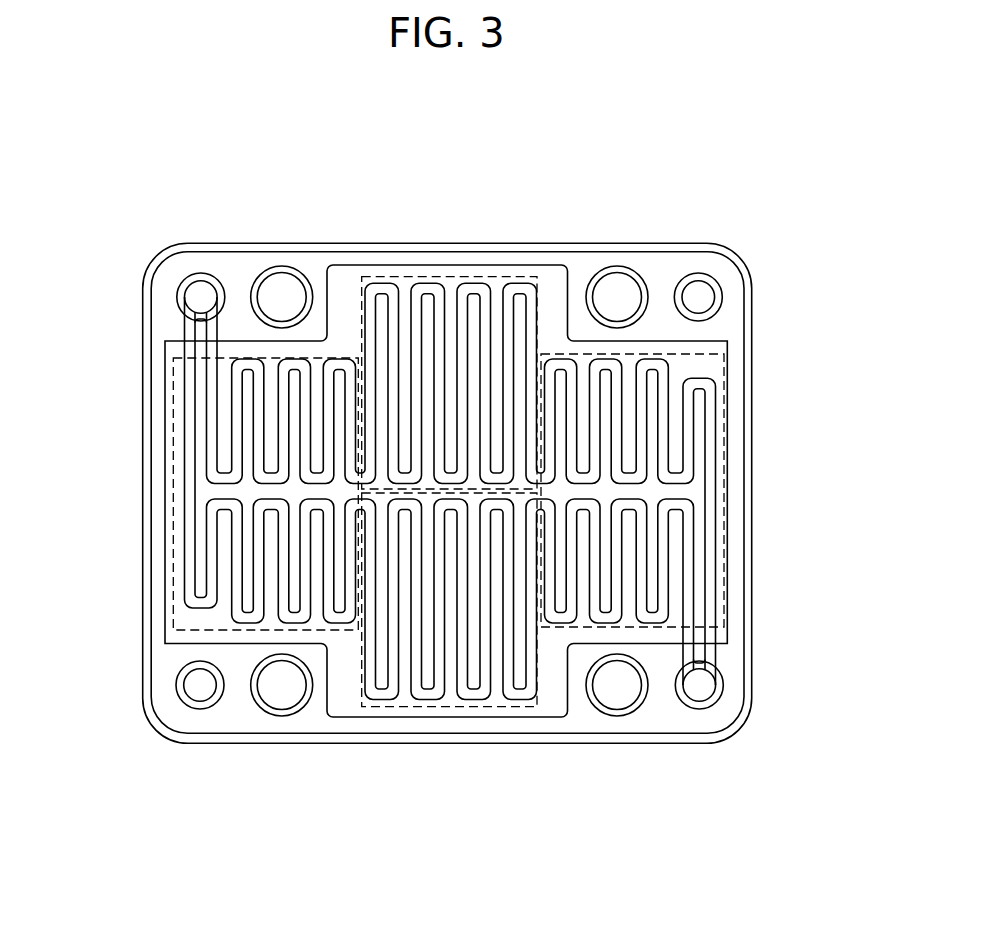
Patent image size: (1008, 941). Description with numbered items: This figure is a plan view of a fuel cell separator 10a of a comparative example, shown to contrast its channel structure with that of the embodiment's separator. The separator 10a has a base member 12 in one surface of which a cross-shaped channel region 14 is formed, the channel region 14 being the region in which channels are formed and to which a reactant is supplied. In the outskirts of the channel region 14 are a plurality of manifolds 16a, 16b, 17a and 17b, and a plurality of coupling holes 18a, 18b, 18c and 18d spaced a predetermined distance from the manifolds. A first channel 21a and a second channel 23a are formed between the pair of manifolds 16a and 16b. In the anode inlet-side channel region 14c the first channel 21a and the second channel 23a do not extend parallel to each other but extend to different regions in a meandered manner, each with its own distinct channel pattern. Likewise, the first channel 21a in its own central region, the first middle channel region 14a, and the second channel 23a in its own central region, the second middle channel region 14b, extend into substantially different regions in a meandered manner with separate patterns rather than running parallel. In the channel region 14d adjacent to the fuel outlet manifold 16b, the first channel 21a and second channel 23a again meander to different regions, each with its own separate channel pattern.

The separator 10a is at (714, 140).
The base member 12 is at (739, 372).
The channel region 14 is at (731, 410).
The first middle channel region 14a is at (449, 707).
The second middle channel region 14b is at (455, 278).
The anode inlet-side channel region 14c is at (172, 473).
The channel region adjacent to the fuel outlet manifold 14d is at (732, 470).
The manifold 16a is at (201, 292).
The fuel outlet manifold 16b is at (699, 692).
The manifold 17a is at (699, 288).
The manifold 17b is at (199, 692).
The coupling hole 18a is at (283, 292).
The coupling hole 18b is at (617, 292).
The coupling hole 18c is at (617, 692).
The coupling hole 18d is at (282, 695).
The first channel 21a is at (690, 514).
The second channel 23a is at (713, 575).